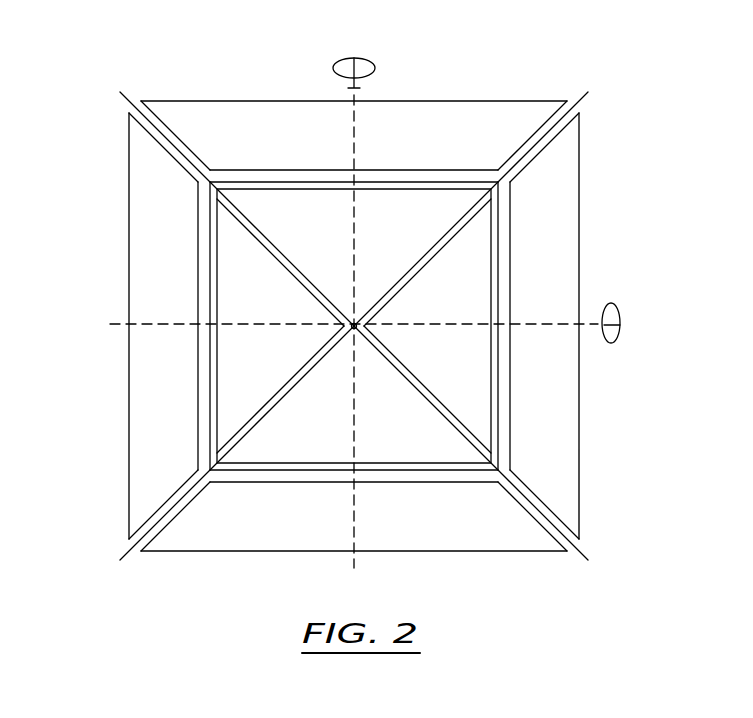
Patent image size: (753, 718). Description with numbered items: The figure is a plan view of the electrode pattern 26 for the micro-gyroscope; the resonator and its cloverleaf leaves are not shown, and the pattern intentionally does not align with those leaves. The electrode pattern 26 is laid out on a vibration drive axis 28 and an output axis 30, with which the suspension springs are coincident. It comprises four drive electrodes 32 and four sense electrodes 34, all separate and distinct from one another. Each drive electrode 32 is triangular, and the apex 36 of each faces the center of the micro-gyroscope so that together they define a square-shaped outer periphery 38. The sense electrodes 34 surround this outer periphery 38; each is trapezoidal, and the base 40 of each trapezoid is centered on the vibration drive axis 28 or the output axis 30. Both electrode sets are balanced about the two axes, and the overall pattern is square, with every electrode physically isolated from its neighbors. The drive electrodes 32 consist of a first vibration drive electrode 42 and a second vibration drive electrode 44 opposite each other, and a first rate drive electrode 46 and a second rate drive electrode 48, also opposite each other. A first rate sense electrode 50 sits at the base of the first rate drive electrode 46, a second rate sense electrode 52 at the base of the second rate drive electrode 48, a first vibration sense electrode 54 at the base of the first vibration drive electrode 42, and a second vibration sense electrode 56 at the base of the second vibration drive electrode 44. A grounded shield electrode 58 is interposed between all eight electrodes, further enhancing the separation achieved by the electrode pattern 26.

The electrode pattern 26 is at (640, 87).
The vibration drive axis 28 is at (357, 88).
The output axis 30 is at (588, 323).
The drive electrodes 32 is at (280, 202).
The sense electrodes 34 is at (497, 110).
The apex 36 is at (366, 316).
The square-shaped outer periphery 38 is at (580, 482).
The base 40 is at (427, 100).
The first vibration drive electrode 42 is at (233, 292).
The second vibration drive electrode 44 is at (482, 228).
The first rate drive electrode 46 is at (438, 200).
The second rate drive electrode 48 is at (272, 448).
The first rate sense electrode 50 is at (292, 118).
The second rate sense electrode 52 is at (492, 533).
The first vibration sense electrode 54 is at (138, 245).
The second vibration sense electrode 56 is at (568, 377).
The shield electrode 58 is at (128, 540).